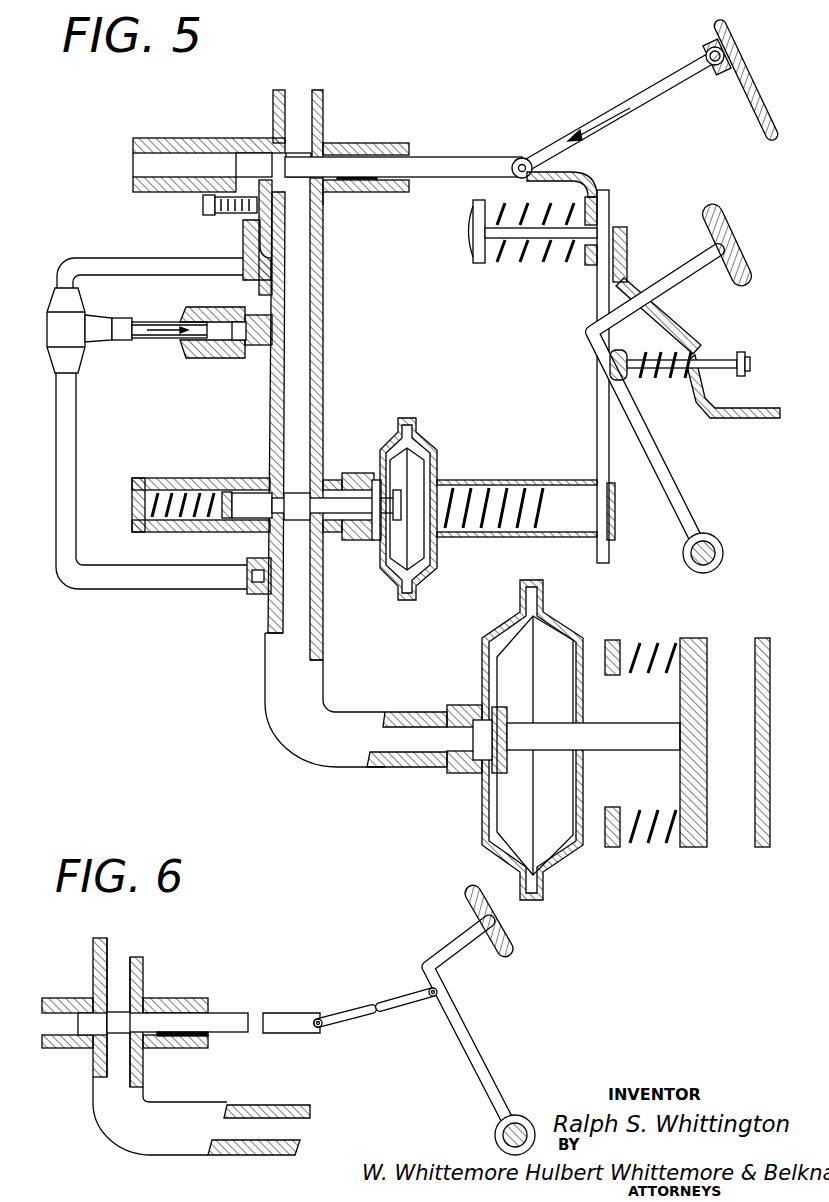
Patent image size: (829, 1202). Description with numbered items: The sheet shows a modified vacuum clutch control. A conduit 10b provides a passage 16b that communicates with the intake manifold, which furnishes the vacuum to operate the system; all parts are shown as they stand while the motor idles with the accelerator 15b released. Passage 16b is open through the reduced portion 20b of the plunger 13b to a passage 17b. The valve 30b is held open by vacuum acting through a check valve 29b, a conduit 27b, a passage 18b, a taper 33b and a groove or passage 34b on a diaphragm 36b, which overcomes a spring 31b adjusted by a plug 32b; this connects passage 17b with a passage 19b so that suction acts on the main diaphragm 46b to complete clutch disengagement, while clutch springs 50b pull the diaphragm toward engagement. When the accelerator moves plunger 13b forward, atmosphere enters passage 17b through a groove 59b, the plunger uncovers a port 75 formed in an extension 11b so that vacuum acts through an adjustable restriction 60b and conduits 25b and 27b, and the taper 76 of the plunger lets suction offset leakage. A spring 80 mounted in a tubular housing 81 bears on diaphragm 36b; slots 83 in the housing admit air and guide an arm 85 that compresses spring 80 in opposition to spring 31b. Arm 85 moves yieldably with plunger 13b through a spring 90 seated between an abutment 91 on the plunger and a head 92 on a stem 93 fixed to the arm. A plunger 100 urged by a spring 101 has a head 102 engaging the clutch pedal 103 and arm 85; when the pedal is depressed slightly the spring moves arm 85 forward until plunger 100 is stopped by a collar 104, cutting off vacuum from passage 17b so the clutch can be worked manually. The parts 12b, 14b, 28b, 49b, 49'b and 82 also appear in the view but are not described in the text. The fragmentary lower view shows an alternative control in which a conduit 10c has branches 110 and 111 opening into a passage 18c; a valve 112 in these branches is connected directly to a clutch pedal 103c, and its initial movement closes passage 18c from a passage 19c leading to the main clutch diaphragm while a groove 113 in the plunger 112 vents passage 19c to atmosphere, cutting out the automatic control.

In FIG. 5, the conduit 10b is at (305, 130).
In FIG. 5, the extension 11b is at (158, 138).
In FIG. 5, the outlet pipe 12b is at (402, 143).
In FIG. 5, the plunger 13b is at (470, 157).
In FIG. 5, the lever 14b is at (668, 90).
In FIG. 5, the accelerator 15b is at (712, 42).
In FIG. 5, the passage 16b is at (302, 132).
In FIG. 5, the passage 17b is at (324, 340).
In FIG. 5, the passage 18b is at (305, 614).
In FIG. 5, the passage 19b is at (412, 750).
In FIG. 5, the reduced portion 20b is at (324, 205).
In FIG. 5, the conduit 25b is at (86, 262).
In FIG. 5, the conduit 27b is at (80, 590).
In FIG. 5, the union fitting 28b is at (124, 334).
In FIG. 5, the check valve 29b is at (234, 316).
In FIG. 5, the valve 30b is at (244, 500).
In FIG. 5, the spring 31b is at (184, 492).
In FIG. 5, the plug 32b is at (128, 496).
In FIG. 5, the taper 33b is at (265, 532).
In FIG. 5, the groove or passage 34b is at (334, 520).
In FIG. 5, the diaphragm 36b is at (428, 448).
In FIG. 5, the diaphragm 46b is at (558, 634).
In FIG. 5, the plate 49b is at (698, 640).
In FIG. 5, the stop plate 49'b is at (763, 727).
In FIG. 5, the clutch springs 50b is at (641, 644).
In FIG. 5, the groove 59b is at (382, 192).
In FIG. 5, the adjustable restriction 60b is at (208, 213).
In FIG. 5, the port 75 is at (205, 203).
In FIG. 5, the taper 76 is at (325, 144).
In FIG. 5, the spring 80 is at (496, 494).
In FIG. 5, the tubular housing 81 is at (455, 480).
In FIG. 5, the flange 82 is at (572, 484).
In FIG. 5, the slots 83 is at (567, 537).
In FIG. 5, the arm 85 is at (600, 412).
In FIG. 5, the spring 90 is at (497, 240).
In FIG. 5, the abutment 91 is at (578, 266).
In FIG. 5, the head 92 is at (472, 258).
In FIG. 5, the stem 93 is at (522, 216).
In FIG. 5, the plunger 100 is at (690, 358).
In FIG. 5, the spring 101 is at (660, 372).
In FIG. 5, the head 102 is at (617, 350).
In FIG. 5, the clutch pedal 103 is at (668, 275).
In FIG. 5, the collar 104 is at (741, 352).
In FIG. 6, the conduit 10c is at (100, 946).
In FIG. 6, the passage 18c is at (118, 962).
In FIG. 6, the passage 19c is at (270, 1140).
In FIG. 6, the clutch pedal 103c is at (428, 940).
In FIG. 6, the branch 110 is at (52, 998).
In FIG. 6, the branch 111 is at (187, 999).
In FIG. 6, the valve 112 is at (230, 1018).
In FIG. 6, the groove 113 is at (200, 1040).